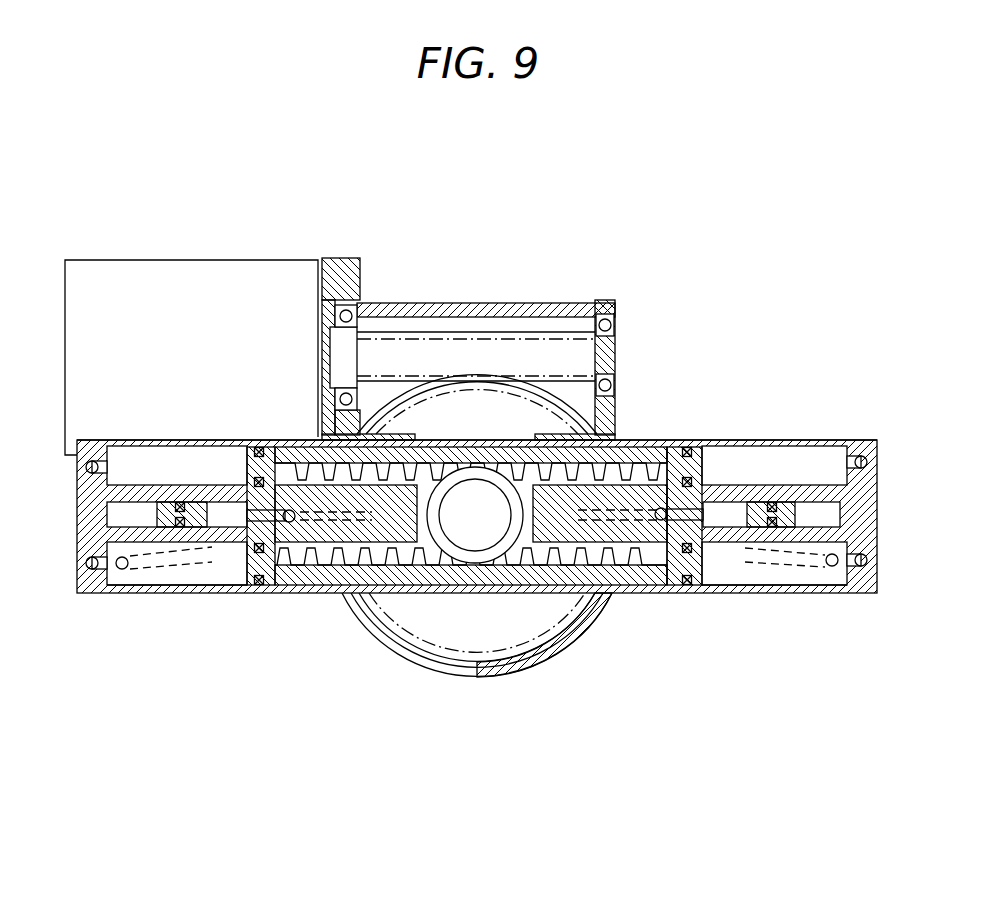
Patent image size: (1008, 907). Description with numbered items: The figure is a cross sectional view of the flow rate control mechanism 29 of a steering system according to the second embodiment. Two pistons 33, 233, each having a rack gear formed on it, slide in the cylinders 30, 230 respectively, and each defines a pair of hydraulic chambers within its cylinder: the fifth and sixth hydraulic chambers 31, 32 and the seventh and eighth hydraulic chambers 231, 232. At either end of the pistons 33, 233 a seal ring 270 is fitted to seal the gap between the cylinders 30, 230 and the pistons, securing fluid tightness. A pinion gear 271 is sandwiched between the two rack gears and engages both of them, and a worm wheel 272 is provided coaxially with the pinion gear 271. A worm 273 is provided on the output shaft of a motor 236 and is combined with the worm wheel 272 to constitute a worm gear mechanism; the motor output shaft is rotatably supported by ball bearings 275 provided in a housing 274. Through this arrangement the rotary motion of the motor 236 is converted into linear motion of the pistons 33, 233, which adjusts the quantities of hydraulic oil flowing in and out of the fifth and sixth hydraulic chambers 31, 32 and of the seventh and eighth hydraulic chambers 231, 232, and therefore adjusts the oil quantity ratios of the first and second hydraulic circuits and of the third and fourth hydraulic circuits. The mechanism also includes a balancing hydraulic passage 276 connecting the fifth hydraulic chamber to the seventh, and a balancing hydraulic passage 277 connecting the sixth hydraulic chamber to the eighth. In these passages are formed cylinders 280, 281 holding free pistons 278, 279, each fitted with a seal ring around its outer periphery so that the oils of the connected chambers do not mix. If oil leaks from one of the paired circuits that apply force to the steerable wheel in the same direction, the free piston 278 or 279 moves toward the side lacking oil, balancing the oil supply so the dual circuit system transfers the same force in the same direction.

The flow rate control mechanism 29 is at (730, 301).
The cylinder 30 is at (740, 438).
The fifth hydraulic chamber 31 is at (143, 455).
The sixth hydraulic chamber 32 is at (790, 438).
The piston 33 is at (640, 438).
The cylinder 230 is at (703, 595).
The seventh hydraulic chamber 231 is at (745, 580).
The eighth hydraulic chamber 232 is at (207, 593).
The piston 233 is at (312, 593).
The motor 236 is at (216, 280).
The seal ring 270 is at (688, 438).
The pinion gear 271 is at (492, 548).
The worm wheel 272 is at (463, 680).
The worm 273 is at (525, 338).
The housing 274 is at (446, 303).
The ball bearings 275 is at (348, 308).
The balancing hydraulic passage 276 is at (823, 590).
The balancing hydraulic passage 277 is at (147, 583).
The free piston 278 is at (203, 505).
The free piston 279 is at (815, 565).
The cylinder 280 is at (90, 595).
The cylinder 281 is at (827, 500).